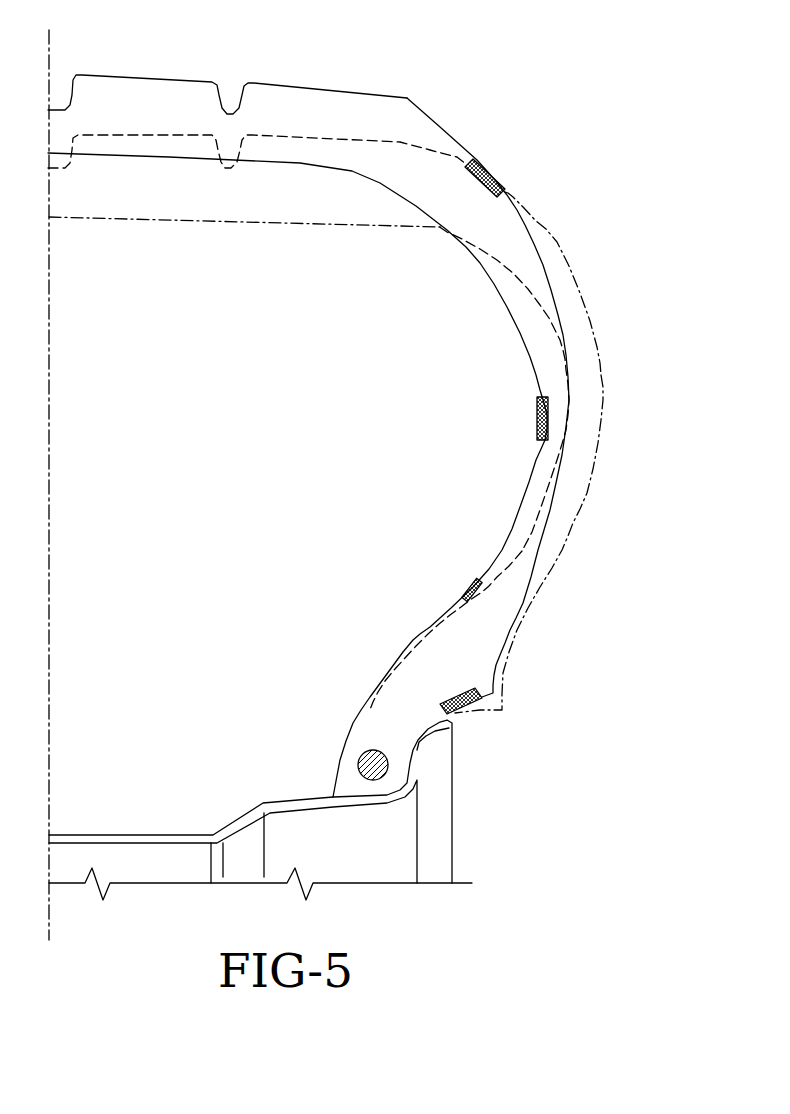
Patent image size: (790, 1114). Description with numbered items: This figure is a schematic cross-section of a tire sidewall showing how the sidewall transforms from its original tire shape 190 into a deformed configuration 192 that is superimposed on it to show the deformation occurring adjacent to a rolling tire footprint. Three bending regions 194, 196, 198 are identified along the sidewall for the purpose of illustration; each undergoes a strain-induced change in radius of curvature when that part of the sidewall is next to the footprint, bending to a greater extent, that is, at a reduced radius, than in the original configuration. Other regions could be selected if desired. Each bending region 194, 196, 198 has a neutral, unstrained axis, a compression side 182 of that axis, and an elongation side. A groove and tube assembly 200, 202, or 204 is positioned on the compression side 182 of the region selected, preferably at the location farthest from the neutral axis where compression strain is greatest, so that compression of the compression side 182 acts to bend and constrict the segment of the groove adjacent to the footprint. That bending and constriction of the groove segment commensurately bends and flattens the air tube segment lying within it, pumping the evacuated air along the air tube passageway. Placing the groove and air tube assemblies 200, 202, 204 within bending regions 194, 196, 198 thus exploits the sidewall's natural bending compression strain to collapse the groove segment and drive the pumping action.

The compression side 182 is at (548, 277).
The original tire shape 190 is at (263, 83).
The deformed tire configuration 192 is at (588, 487).
The bending region 194 is at (470, 580).
The bending region 196 is at (573, 412).
The bending region 198 is at (530, 212).
The groove and tube assembly 200 is at (463, 700).
The groove and tube assembly 202 is at (537, 418).
The groove and tube assembly 204 is at (490, 167).